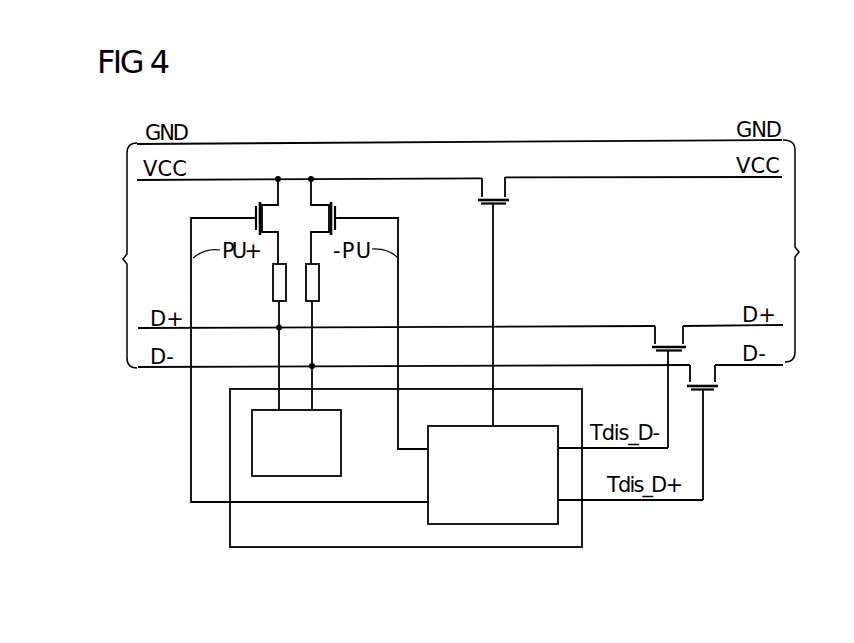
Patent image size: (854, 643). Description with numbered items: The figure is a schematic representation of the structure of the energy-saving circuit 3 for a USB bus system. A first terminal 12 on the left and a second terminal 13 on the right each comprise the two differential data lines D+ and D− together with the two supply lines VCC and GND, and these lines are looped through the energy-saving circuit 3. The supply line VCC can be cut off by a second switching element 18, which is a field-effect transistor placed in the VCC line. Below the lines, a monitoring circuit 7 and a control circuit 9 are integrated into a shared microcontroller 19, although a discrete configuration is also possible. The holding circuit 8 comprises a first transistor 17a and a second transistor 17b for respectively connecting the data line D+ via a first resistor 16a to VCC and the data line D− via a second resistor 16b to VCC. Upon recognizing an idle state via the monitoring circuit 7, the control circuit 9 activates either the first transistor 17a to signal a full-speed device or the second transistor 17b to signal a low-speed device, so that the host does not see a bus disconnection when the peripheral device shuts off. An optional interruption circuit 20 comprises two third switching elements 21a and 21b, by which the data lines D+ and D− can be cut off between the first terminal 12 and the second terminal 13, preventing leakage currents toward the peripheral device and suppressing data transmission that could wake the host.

The energy-saving circuit 3 is at (633, 113).
The monitoring circuit 7 is at (343, 441).
The holding circuit 8 is at (411, 232).
The control circuit 9 is at (428, 481).
The first terminal 12 is at (118, 255).
The second terminal 13 is at (807, 251).
The first resistor 16a is at (272, 287).
The second resistor 16b is at (320, 287).
The first transistor 17a is at (257, 211).
The second transistor 17b is at (335, 211).
The second switching element 18 is at (498, 206).
The shared microcontroller 19 is at (403, 548).
The interruption circuit 20 is at (640, 300).
The third switching element 21a is at (671, 340).
The third switching element 21b is at (712, 392).